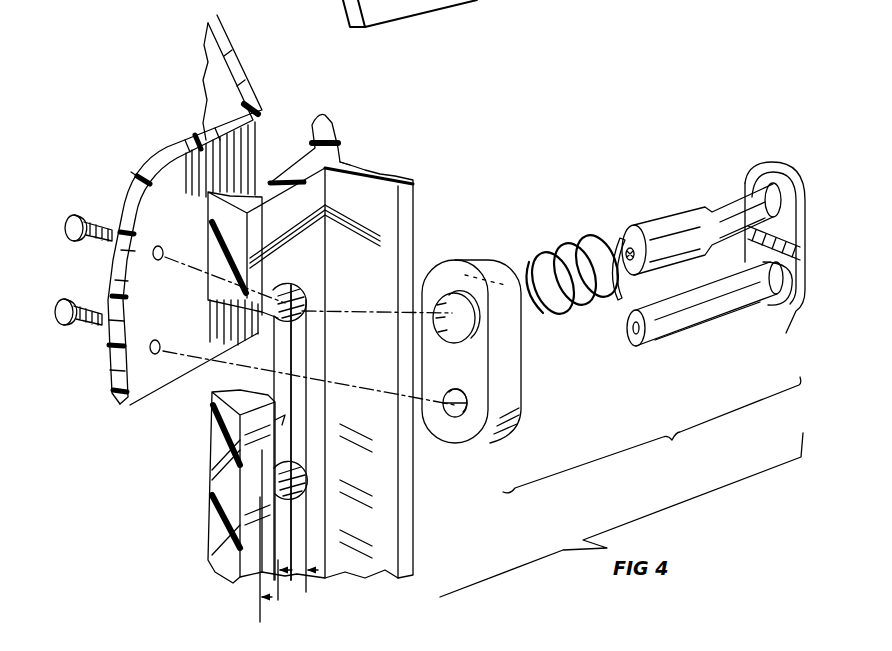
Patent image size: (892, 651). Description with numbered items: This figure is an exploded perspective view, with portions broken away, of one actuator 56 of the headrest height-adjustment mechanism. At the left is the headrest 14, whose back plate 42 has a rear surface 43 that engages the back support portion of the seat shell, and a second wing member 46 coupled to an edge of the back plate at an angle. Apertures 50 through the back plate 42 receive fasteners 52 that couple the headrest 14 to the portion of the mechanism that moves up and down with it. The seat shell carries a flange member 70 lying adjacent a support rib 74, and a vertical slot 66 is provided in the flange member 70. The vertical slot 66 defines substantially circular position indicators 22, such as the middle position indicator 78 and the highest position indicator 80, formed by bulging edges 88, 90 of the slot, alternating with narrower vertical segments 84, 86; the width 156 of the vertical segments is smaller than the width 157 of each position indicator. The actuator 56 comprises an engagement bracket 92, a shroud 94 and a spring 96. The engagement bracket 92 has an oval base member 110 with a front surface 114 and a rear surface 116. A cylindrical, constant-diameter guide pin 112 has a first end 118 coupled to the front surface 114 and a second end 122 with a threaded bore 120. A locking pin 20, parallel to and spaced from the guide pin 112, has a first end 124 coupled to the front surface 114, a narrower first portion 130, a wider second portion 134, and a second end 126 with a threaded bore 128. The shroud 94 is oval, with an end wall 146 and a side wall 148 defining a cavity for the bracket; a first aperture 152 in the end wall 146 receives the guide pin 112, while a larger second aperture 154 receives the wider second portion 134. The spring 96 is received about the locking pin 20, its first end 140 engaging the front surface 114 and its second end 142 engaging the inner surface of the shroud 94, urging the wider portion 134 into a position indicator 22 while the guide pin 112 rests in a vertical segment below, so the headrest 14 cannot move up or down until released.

The headrest 14 is at (178, 134).
The back plate 42 is at (176, 176).
The rear surface 43 is at (194, 321).
The second wing member 46 is at (207, 67).
The apertures 50 is at (159, 246).
The fasteners 52 is at (78, 213).
The support rib 74 is at (392, 212).
The flange member 70 is at (290, 256).
The vertical slot 66 is at (295, 163).
The middle position indicator 78 is at (363, 566).
The vertical segment 84 is at (280, 530).
The vertical segment 86 is at (290, 364).
The bulging edge 88 is at (250, 470).
The position indicators 22 is at (304, 272).
The bulging edge 90 is at (306, 290).
The highest position indicator 80 is at (265, 314).
The width of the vertical segments 156 is at (276, 585).
The width of each position indicator 157 is at (283, 598).
The shroud 94 is at (498, 258).
The second aperture 154 is at (452, 306).
The first aperture 152 is at (445, 418).
The end wall 146 is at (470, 427).
The side wall 148 is at (513, 419).
The spring 96 is at (565, 237).
The second end of spring 142 is at (528, 262).
The first end of spring 140 is at (605, 230).
The locking pin 20 is at (669, 202).
The second end of locking pin 126 is at (650, 220).
The second portion of locking pin 134 is at (678, 230).
The first portion of locking pin 130 is at (724, 219).
The threaded bore 128 is at (628, 268).
The guide pin 112 is at (688, 356).
The threaded bore 120 is at (632, 340).
The second end of guide pin 122 is at (660, 330).
The first end of guide pin 118 is at (684, 332).
The base member 110 is at (788, 160).
The engagement bracket 92 is at (719, 146).
The first end of locking pin 124 is at (772, 187).
The front surface 114 is at (768, 303).
The rear surface 116 is at (792, 318).
The actuator 56 is at (652, 435).